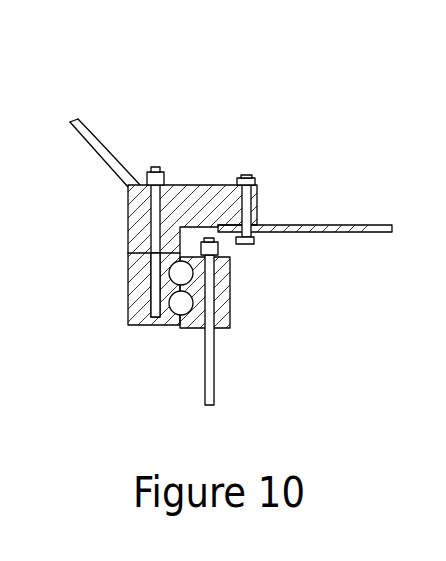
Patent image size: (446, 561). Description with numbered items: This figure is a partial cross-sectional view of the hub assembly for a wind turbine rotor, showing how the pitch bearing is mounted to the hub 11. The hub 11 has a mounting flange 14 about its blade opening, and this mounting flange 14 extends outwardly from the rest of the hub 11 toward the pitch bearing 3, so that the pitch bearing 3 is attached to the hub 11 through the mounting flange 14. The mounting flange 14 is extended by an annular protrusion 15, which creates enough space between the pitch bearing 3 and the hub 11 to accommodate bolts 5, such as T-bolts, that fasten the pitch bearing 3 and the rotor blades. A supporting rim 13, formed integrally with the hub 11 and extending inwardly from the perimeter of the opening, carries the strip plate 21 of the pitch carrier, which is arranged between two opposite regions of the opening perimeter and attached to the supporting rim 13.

The pitch bearing 3 is at (155, 326).
The bolts 5 is at (217, 355).
The hub 11 is at (88, 140).
The supporting rim 13 is at (193, 185).
The mounting flange 14 is at (128, 213).
The annular protrusion 15 is at (128, 252).
The strip plate 21 is at (275, 222).